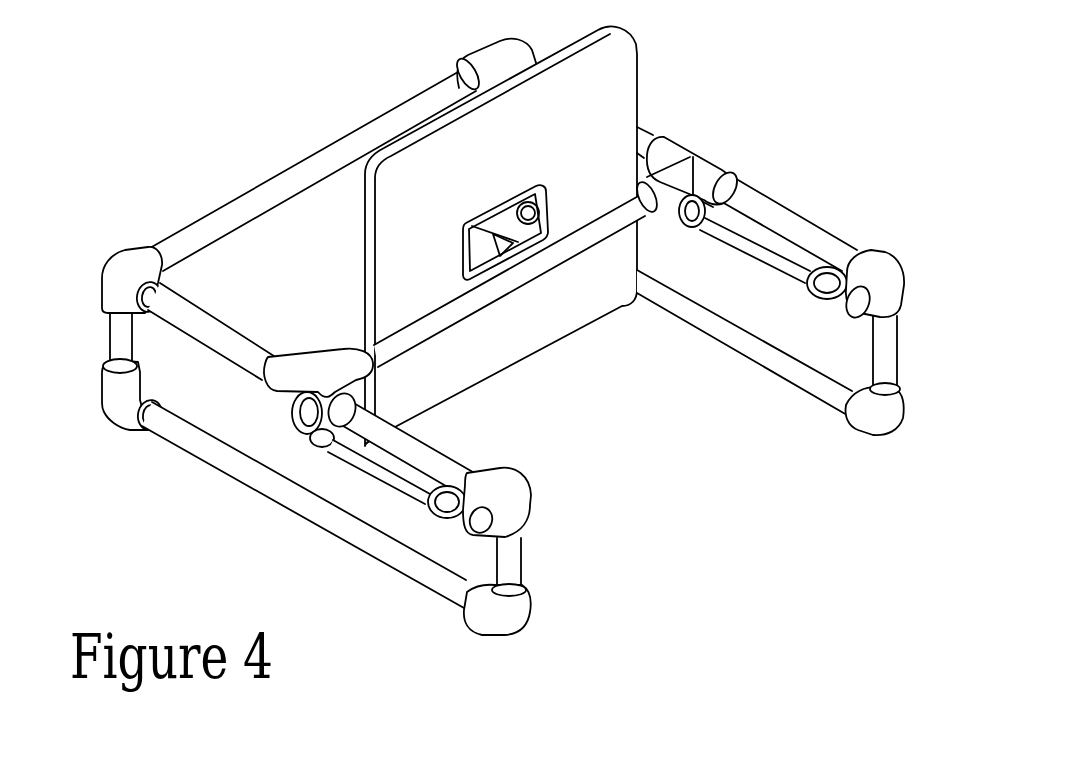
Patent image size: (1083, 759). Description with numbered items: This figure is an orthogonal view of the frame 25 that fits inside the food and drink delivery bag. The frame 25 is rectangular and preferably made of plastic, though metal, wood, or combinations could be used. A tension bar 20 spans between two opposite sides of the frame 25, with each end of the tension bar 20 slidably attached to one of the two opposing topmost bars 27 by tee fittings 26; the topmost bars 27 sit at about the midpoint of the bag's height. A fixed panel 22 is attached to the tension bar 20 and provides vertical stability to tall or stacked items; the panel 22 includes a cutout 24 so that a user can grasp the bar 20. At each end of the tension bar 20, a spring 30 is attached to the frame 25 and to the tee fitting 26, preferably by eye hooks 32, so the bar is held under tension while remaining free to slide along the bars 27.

The tension bar 20 is at (640, 243).
The fixed panel 22 is at (600, 84).
The cutout 24 is at (513, 237).
The frame 25 is at (887, 357).
The tee fitting 26 is at (320, 373).
The topmost bar 27 is at (444, 460).
The spring 30 is at (407, 483).
The eye hook 32 is at (312, 420).